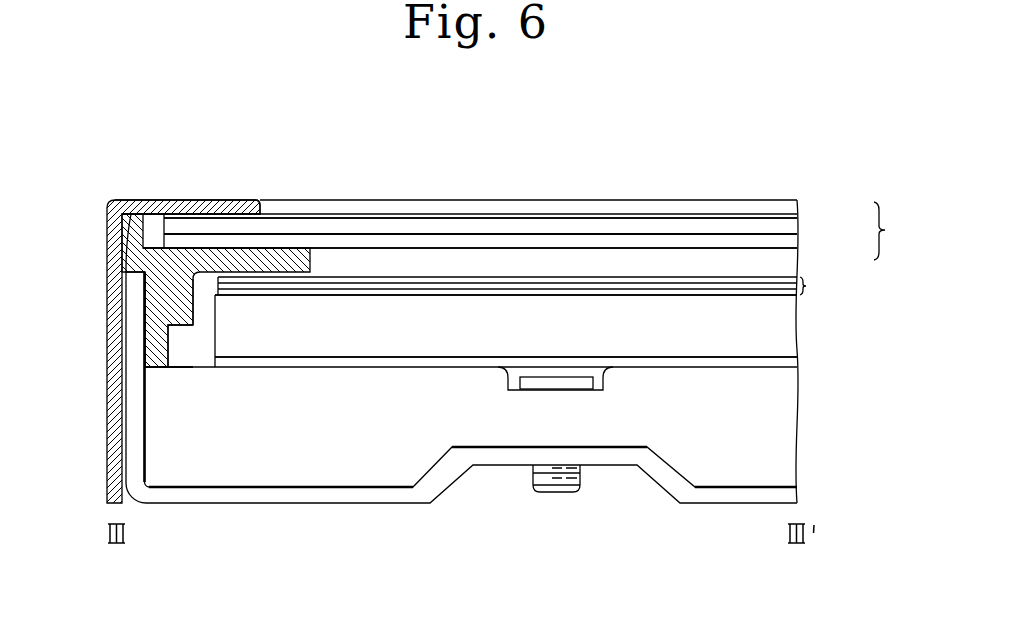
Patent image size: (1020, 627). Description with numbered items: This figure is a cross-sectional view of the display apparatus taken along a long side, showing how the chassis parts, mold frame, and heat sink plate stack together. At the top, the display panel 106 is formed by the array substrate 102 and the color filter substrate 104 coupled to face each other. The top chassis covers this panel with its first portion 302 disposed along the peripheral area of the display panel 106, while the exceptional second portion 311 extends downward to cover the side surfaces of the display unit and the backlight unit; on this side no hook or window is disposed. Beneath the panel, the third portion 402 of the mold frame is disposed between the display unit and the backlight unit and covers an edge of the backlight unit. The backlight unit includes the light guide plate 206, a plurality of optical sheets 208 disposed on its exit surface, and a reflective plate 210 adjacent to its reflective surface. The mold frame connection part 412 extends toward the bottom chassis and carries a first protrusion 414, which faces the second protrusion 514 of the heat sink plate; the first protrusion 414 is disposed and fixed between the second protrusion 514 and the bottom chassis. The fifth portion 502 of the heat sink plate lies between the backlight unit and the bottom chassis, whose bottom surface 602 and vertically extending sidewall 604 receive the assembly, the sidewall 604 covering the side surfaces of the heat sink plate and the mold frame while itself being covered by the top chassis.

The exceptional second portion 311 is at (113, 230).
The first portion 302 is at (232, 202).
The third portion 402 is at (266, 257).
The mold frame connection part 412 is at (147, 335).
The second protrusion 514 is at (173, 342).
The first protrusion 414 is at (148, 357).
The sidewall 604 is at (132, 415).
The bottom surface 602 is at (377, 495).
The array substrate 102 is at (787, 227).
The color filter substrate 104 is at (787, 240).
The display panel 106 is at (526, 230).
The optical sheets 208 is at (531, 288).
The light guide plate 206 is at (783, 332).
The reflective plate 210 is at (782, 362).
The fifth portion 502 is at (782, 430).